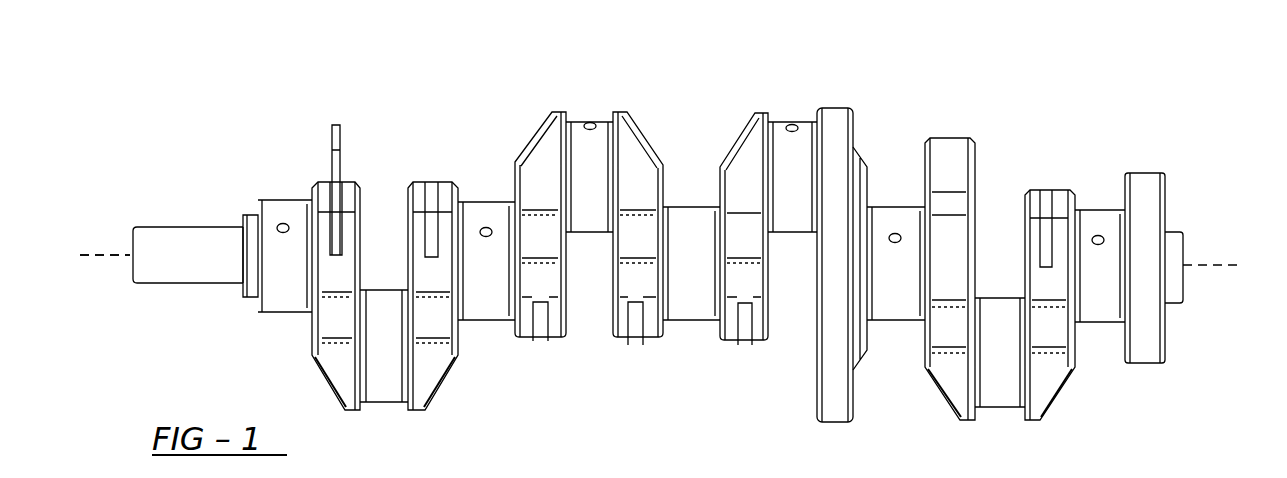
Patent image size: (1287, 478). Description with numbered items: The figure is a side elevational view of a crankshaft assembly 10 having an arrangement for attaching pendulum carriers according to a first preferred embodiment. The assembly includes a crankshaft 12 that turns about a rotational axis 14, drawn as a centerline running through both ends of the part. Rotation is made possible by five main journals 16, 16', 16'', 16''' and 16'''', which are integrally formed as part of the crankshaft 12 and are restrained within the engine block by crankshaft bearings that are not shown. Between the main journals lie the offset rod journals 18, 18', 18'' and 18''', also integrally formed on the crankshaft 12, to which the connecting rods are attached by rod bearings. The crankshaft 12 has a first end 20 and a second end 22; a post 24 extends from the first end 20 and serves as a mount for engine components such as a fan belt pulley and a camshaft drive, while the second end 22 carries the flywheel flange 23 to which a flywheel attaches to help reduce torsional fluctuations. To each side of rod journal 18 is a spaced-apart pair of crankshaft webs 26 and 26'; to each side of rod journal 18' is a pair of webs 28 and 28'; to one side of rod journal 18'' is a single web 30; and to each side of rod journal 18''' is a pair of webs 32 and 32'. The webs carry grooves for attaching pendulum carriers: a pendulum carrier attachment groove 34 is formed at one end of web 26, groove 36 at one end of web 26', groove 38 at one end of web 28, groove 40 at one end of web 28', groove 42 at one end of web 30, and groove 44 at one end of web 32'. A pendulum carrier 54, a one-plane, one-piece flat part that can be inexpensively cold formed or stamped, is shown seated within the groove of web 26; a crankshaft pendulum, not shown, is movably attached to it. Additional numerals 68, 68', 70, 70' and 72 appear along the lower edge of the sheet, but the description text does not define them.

The crankshaft assembly 10 is at (292, 64).
The crankshaft 12 is at (213, 240).
The rotational axis 14 is at (103, 259).
The main journal 16 is at (285, 224).
The main journal 16' is at (493, 220).
The main journal 16'' is at (701, 220).
The main journal 16''' is at (909, 210).
The main journal 16'''' is at (1130, 221).
The rod journal 18 is at (395, 372).
The rod journal 18' is at (606, 145).
The rod journal 18'' is at (815, 141).
The rod journal 18''' is at (1019, 388).
The first end 20 is at (175, 238).
The second end 22 is at (1152, 342).
The flywheel flange 23 is at (1138, 188).
The post 24 is at (202, 270).
The crankshaft web 26 is at (322, 301).
The crankshaft web 26' is at (454, 301).
The crankshaft web 28 is at (540, 195).
The crankshaft web 28' is at (657, 207).
The crankshaft web 30 is at (755, 130).
The crankshaft web 32 is at (939, 296).
The crankshaft web 32' is at (1071, 314).
The pendulum carrier attachment groove 34 is at (337, 197).
The pendulum carrier attachment groove 36 is at (430, 197).
The pendulum carrier attachment groove 38 is at (537, 328).
The pendulum carrier attachment groove 40 is at (643, 323).
The pendulum carrier attachment groove 42 is at (745, 333).
The pendulum carrier attachment groove 44 is at (1042, 205).
The pendulum carrier 54 is at (337, 125).
The balance weight 68 is at (678, 457).
The balance weight 68' is at (715, 459).
The balance weight 70 is at (762, 459).
The balance weight 70' is at (821, 467).
The balance weight 72 is at (772, 477).